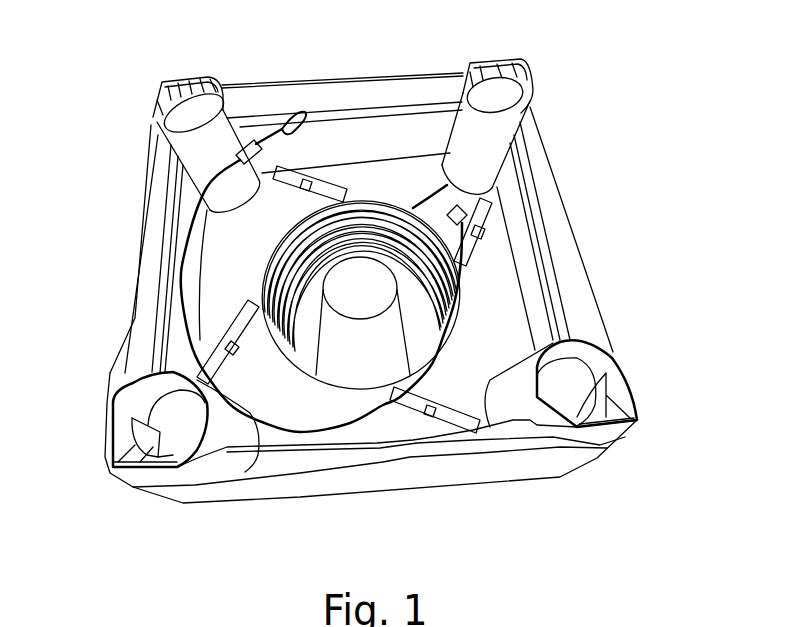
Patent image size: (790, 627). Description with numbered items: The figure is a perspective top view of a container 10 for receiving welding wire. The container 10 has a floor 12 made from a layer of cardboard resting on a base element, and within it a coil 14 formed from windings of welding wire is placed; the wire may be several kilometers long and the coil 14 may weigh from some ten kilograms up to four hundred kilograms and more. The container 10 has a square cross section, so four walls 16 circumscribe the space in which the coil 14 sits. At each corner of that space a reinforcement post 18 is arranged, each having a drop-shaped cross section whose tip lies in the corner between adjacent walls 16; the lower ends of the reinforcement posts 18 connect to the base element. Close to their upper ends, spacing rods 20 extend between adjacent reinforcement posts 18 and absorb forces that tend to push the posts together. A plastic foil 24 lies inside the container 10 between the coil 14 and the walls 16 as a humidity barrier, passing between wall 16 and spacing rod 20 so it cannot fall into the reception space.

The container 10 is at (453, 22).
The floor 12 is at (467, 300).
The coil 14 is at (467, 273).
The walls 16 is at (383, 97).
The reinforcement post 18 is at (185, 78).
The spacing rod 20 is at (333, 113).
The plastic foil 24 is at (550, 463).